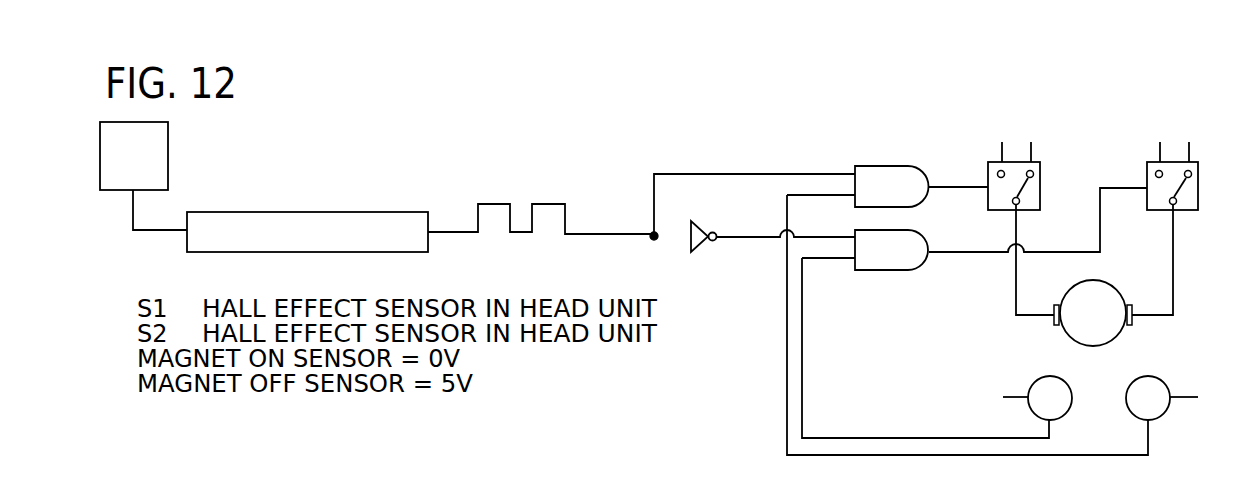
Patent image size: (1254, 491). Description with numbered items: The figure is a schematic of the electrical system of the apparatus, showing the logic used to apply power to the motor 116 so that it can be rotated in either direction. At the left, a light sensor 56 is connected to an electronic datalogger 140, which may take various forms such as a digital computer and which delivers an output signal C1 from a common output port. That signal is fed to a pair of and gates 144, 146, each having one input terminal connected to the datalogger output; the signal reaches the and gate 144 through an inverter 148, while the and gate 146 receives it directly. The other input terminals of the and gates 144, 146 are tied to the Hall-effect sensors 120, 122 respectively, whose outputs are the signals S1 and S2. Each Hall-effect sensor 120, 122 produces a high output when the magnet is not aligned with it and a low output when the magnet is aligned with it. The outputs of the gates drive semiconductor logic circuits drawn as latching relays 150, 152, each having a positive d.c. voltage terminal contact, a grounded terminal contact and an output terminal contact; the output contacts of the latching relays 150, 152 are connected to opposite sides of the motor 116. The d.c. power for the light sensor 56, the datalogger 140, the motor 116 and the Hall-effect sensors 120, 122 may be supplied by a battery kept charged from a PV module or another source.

The light sensor 56 is at (168, 152).
The datalogger 140 is at (273, 212).
The inverter 148 is at (690, 252).
The and gate 146 is at (895, 166).
The and gate 144 is at (898, 270).
The latching relay 152 is at (983, 177).
The latching relay 150 is at (1145, 177).
The motor 116 is at (1103, 280).
The Hall-effect sensor 120 is at (1048, 377).
The Hall-effect sensor 122 is at (1153, 377).